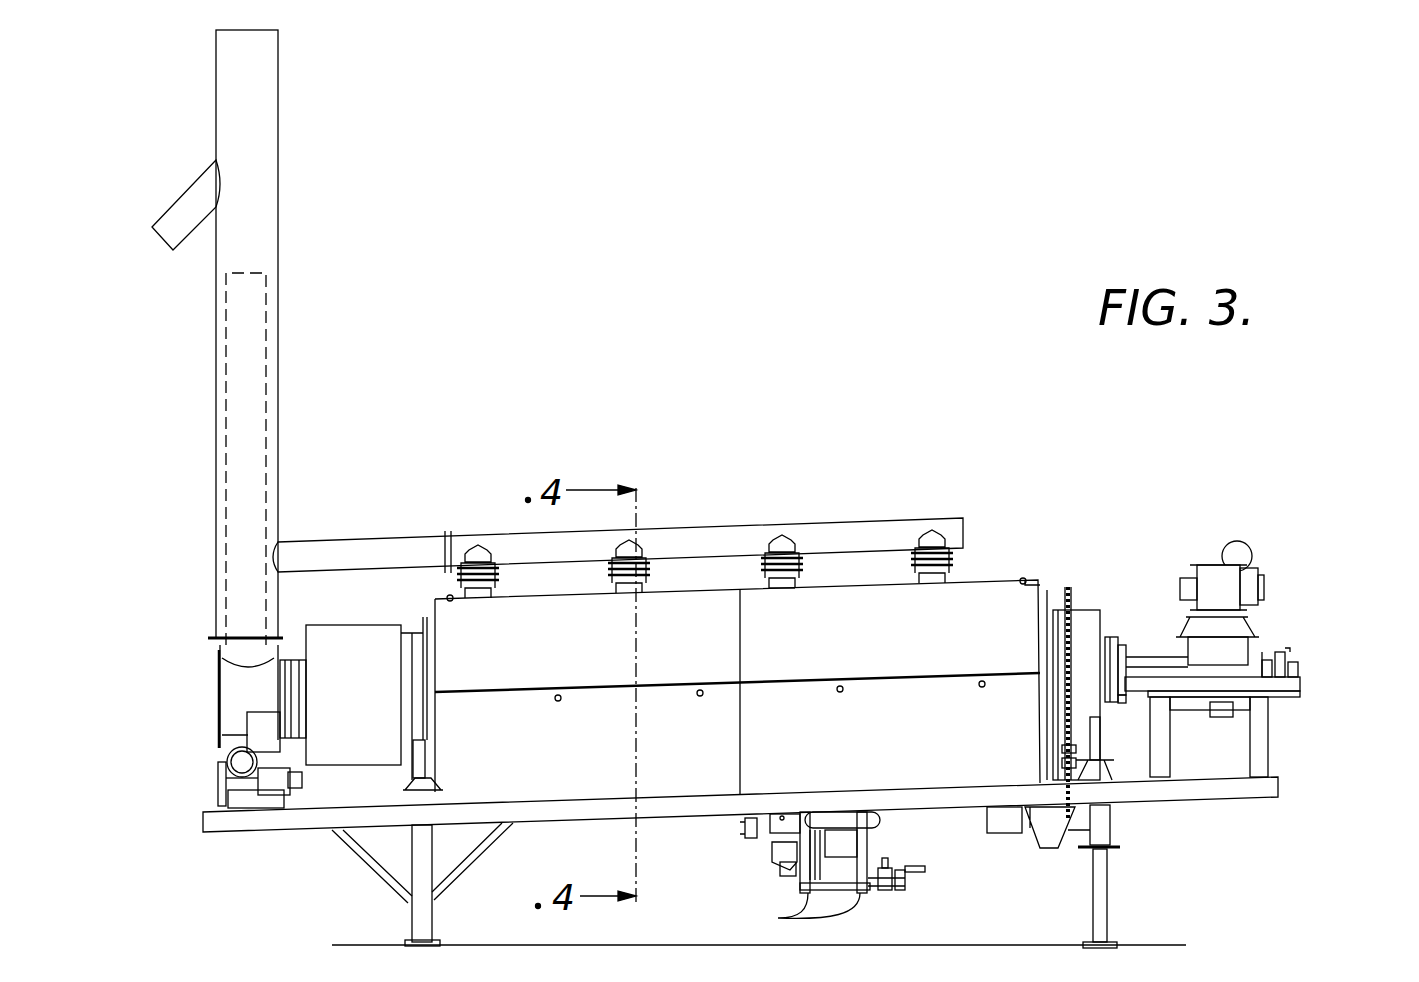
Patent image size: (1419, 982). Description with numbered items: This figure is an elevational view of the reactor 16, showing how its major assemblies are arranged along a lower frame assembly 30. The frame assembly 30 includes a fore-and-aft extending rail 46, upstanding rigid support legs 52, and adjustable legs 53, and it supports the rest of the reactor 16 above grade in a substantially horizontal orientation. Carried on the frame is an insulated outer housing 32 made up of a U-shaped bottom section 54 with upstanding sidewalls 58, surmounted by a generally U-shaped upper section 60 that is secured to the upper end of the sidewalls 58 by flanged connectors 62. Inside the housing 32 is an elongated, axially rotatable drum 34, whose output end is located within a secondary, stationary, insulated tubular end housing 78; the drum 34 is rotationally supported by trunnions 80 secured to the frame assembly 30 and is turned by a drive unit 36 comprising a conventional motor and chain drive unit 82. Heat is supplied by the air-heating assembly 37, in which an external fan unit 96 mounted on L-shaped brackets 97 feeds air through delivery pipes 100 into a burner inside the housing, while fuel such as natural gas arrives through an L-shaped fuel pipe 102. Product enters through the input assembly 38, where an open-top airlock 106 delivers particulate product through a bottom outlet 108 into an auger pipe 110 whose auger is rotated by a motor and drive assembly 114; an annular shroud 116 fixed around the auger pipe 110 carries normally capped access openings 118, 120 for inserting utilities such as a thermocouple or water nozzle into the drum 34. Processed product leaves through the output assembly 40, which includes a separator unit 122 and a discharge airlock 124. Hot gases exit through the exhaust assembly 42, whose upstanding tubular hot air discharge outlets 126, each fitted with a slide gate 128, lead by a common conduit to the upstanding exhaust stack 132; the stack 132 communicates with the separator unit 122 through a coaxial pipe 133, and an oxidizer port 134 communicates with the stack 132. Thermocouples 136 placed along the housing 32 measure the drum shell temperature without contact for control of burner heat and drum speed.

The reactor 16 is at (822, 412).
The lower frame assembly 30 is at (295, 887).
The insulated outer housing 32 is at (1002, 566).
The drum 34 is at (1094, 592).
The drive unit 36 is at (1012, 846).
The air-heating assembly 37 is at (885, 902).
The product input assembly 38 is at (1322, 628).
The product output assembly 40 is at (183, 684).
The hot gas exhaust assembly 42 is at (686, 496).
The rail 46 is at (570, 810).
The support legs 52 is at (420, 920).
The adjustable legs 53 is at (1100, 882).
The bottom section 54 is at (919, 786).
The sidewalls 58 is at (690, 740).
The upper section 60 is at (848, 578).
The flanged connectors 62 is at (925, 672).
The tubular end housing 78 is at (365, 640).
The trunnions 80 is at (426, 745).
The motor and chain drive unit 82 is at (1062, 636).
The external fan unit 96 is at (765, 867).
The L-shaped brackets 97 is at (802, 914).
The delivery pipes 100 is at (842, 820).
The fuel pipe 102 is at (717, 817).
The airlock 106 is at (1215, 568).
The bottom outlet 108 is at (1237, 630).
The auger pipe 110 is at (1168, 676).
The motor and drive assembly 114 is at (1228, 712).
The annular shroud 116 is at (1124, 645).
The access opening 118 is at (1132, 660).
The access opening 120 is at (1137, 686).
The separator unit 122 is at (237, 705).
The discharge airlock 124 is at (222, 782).
The hot air discharge outlets 126 is at (782, 585).
The slide gate 128 is at (765, 569).
The exhaust stack 132 is at (265, 190).
The coaxial pipe 133 is at (240, 372).
The oxidizer port 134 is at (182, 208).
The thermocouples 136 is at (843, 692).